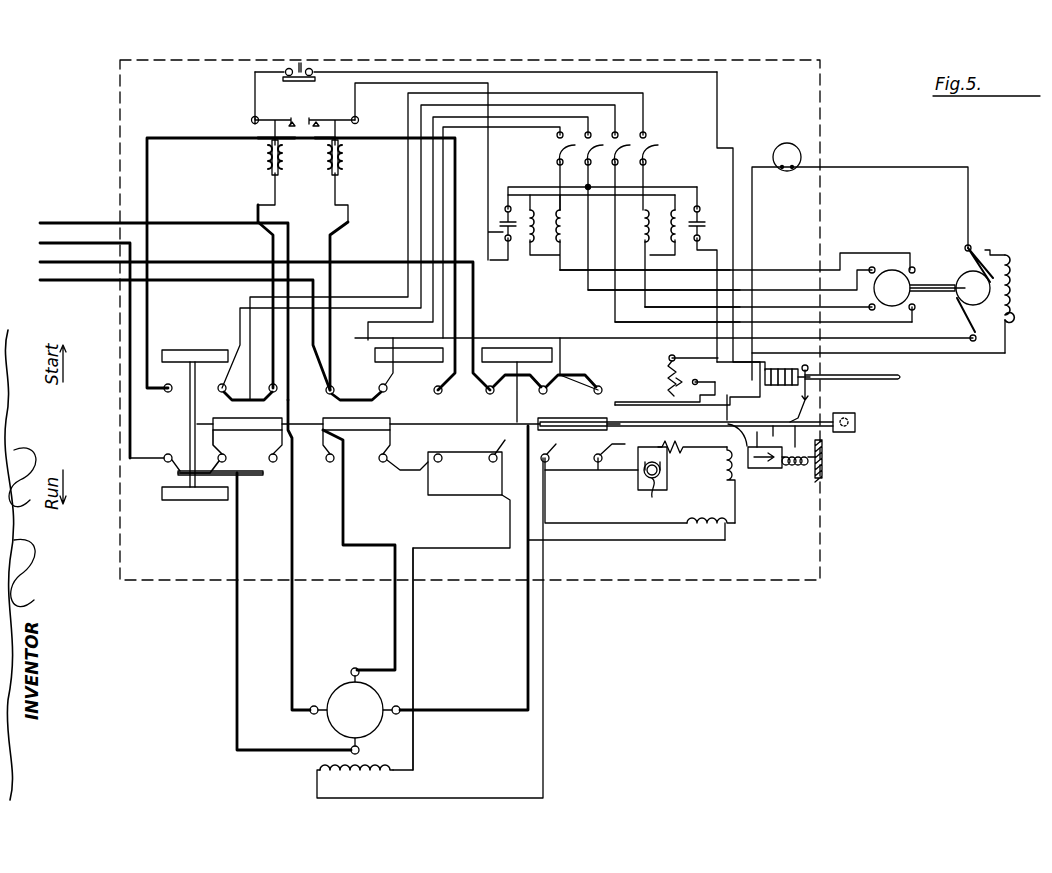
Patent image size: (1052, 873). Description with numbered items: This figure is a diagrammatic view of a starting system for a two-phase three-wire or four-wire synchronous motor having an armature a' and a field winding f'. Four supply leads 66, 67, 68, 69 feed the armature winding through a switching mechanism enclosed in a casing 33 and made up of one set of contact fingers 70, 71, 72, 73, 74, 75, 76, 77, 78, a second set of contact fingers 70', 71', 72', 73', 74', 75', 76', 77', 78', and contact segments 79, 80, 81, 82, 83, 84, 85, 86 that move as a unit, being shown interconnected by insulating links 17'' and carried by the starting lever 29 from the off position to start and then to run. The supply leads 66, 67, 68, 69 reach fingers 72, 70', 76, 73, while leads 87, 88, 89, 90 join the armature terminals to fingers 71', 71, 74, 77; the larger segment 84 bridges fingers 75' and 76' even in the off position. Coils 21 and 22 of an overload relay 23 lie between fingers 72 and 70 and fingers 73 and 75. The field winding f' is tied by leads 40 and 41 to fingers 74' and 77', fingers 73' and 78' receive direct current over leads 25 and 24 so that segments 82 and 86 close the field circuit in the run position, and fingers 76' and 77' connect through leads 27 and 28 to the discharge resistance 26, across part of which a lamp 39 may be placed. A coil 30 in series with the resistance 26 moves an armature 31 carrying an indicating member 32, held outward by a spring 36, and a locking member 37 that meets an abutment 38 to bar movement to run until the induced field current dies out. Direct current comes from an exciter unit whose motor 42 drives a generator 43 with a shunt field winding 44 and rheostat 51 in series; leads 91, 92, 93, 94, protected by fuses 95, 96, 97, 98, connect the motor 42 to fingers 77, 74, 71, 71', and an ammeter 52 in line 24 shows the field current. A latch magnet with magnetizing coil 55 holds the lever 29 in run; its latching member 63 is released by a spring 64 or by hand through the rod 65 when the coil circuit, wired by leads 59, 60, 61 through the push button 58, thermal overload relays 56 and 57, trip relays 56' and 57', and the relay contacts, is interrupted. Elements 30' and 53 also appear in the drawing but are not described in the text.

The insulating links 17'' is at (504, 431).
The overload relay coil 21 is at (284, 160).
The overload relay coil 22 is at (344, 158).
The overload relay 23 is at (306, 124).
The direct current lead 24 is at (754, 220).
The direct current lead 25 is at (588, 338).
The discharge resistance 26 is at (688, 443).
The lead 27 is at (616, 490).
The lead 28 is at (598, 474).
The starting lever 29 is at (856, 418).
The coil 30 is at (717, 485).
The coil 30' is at (711, 540).
The armature 31 is at (766, 470).
The indicating member 32 is at (822, 460).
The casing 33 is at (170, 581).
The coil spring 36 is at (822, 478).
The locking member 37 is at (727, 400).
The abutment 38 is at (741, 423).
The incandescent lamp 39 is at (650, 496).
The lead 40 is at (416, 618).
The lead 41 is at (546, 716).
The exciter motor 42 is at (915, 282).
The direct current generator 43 is at (960, 262).
The shunt field winding 44 is at (1010, 275).
The rheostat 51 is at (668, 356).
The ammeter 52 is at (790, 143).
The conductor 53 is at (1005, 350).
The magnetizing coil 55 is at (778, 386).
The thermal overload relay 56 is at (542, 236).
The trip relay 56' is at (501, 235).
The thermal overload relay 57 is at (677, 251).
The trip relay 57' is at (703, 262).
The push button switch 58 is at (314, 68).
The lead 59 is at (714, 98).
The lead 60 is at (270, 68).
The lead 61 is at (386, 86).
The latching member 63 is at (794, 438).
The spring 64 is at (810, 385).
The rod 65 is at (900, 377).
The supply lead 66 is at (78, 221).
The supply lead 67 is at (92, 241).
The supply lead 68 is at (80, 264).
The supply lead 69 is at (100, 282).
The contact finger 70 is at (158, 400).
The contact finger 70' is at (149, 469).
The contact finger 71 is at (245, 384).
The contact finger 71' is at (219, 451).
The contact finger 72 is at (291, 386).
The contact finger 72' is at (297, 455).
The contact finger 73 is at (353, 388).
The contact finger 73' is at (347, 446).
The contact finger 74 is at (403, 365).
The contact finger 74' is at (404, 449).
The contact finger 75 is at (450, 397).
The contact finger 75' is at (465, 473).
The contact finger 76 is at (510, 394).
The contact finger 76' is at (509, 441).
The contact finger 77 is at (567, 389).
The contact finger 77' is at (561, 445).
The contact finger 78 is at (615, 381).
The contact finger 78' is at (620, 443).
The contact segment 79 is at (196, 349).
The contact segment 80 is at (202, 500).
The contact segment 81 is at (238, 418).
The contact segment 82 is at (352, 418).
The contact segment 83 is at (413, 348).
The contact segment 84 is at (438, 500).
The contact segment 85 is at (522, 348).
The contact segment 86 is at (575, 418).
The lead 87 is at (234, 638).
The lead 88 is at (294, 630).
The lead 89 is at (394, 604).
The lead 90 is at (470, 708).
The lead 91 is at (797, 268).
The lead 92 is at (800, 291).
The lead 93 is at (801, 309).
The lead 94 is at (801, 327).
The fuse 95 is at (557, 140).
The fuse 96 is at (620, 228).
The fuse 97 is at (567, 246).
The fuse 98 is at (462, 246).
The armature a' is at (377, 705).
The field winding f' is at (378, 772).